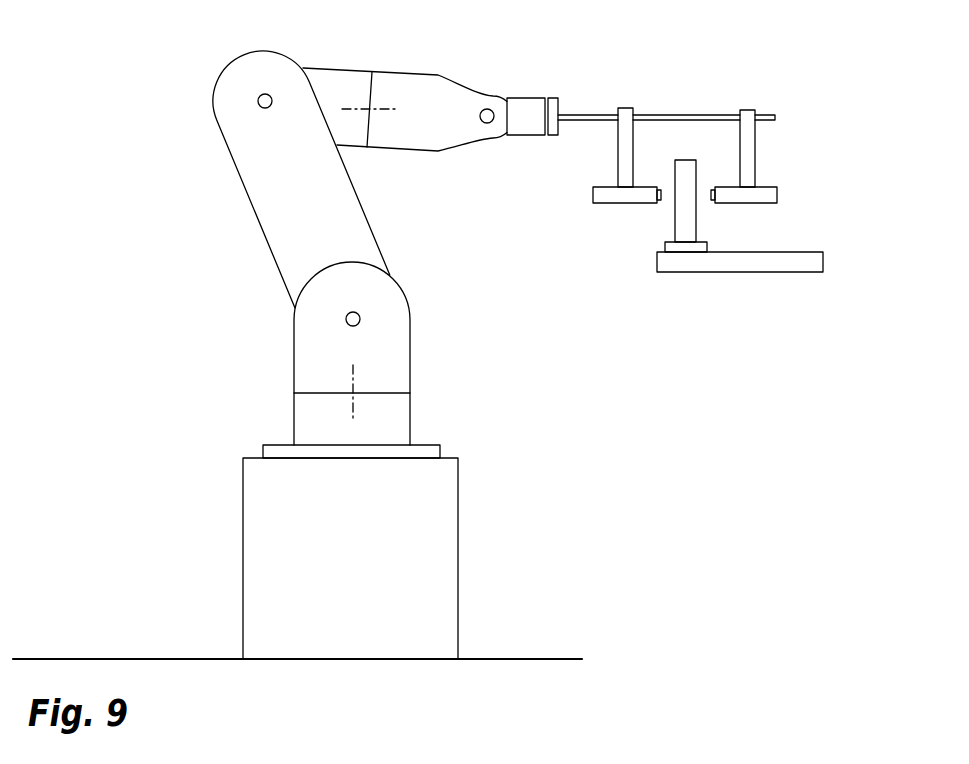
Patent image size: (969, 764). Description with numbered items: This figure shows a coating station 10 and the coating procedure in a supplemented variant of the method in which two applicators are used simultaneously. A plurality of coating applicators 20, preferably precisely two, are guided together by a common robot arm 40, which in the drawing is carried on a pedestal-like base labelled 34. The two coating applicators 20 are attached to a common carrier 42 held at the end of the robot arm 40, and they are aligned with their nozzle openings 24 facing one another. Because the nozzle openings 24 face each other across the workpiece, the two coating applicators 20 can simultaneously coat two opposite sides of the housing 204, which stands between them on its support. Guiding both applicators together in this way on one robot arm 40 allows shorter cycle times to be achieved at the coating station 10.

The coating station 10 is at (322, 179).
The robot arm 40 is at (303, 225).
The robot base 34 is at (228, 333).
The common carrier 42 is at (693, 118).
The nozzle opening 24 is at (660, 199).
The coating applicator 20 is at (617, 207).
The housing 204 is at (687, 213).